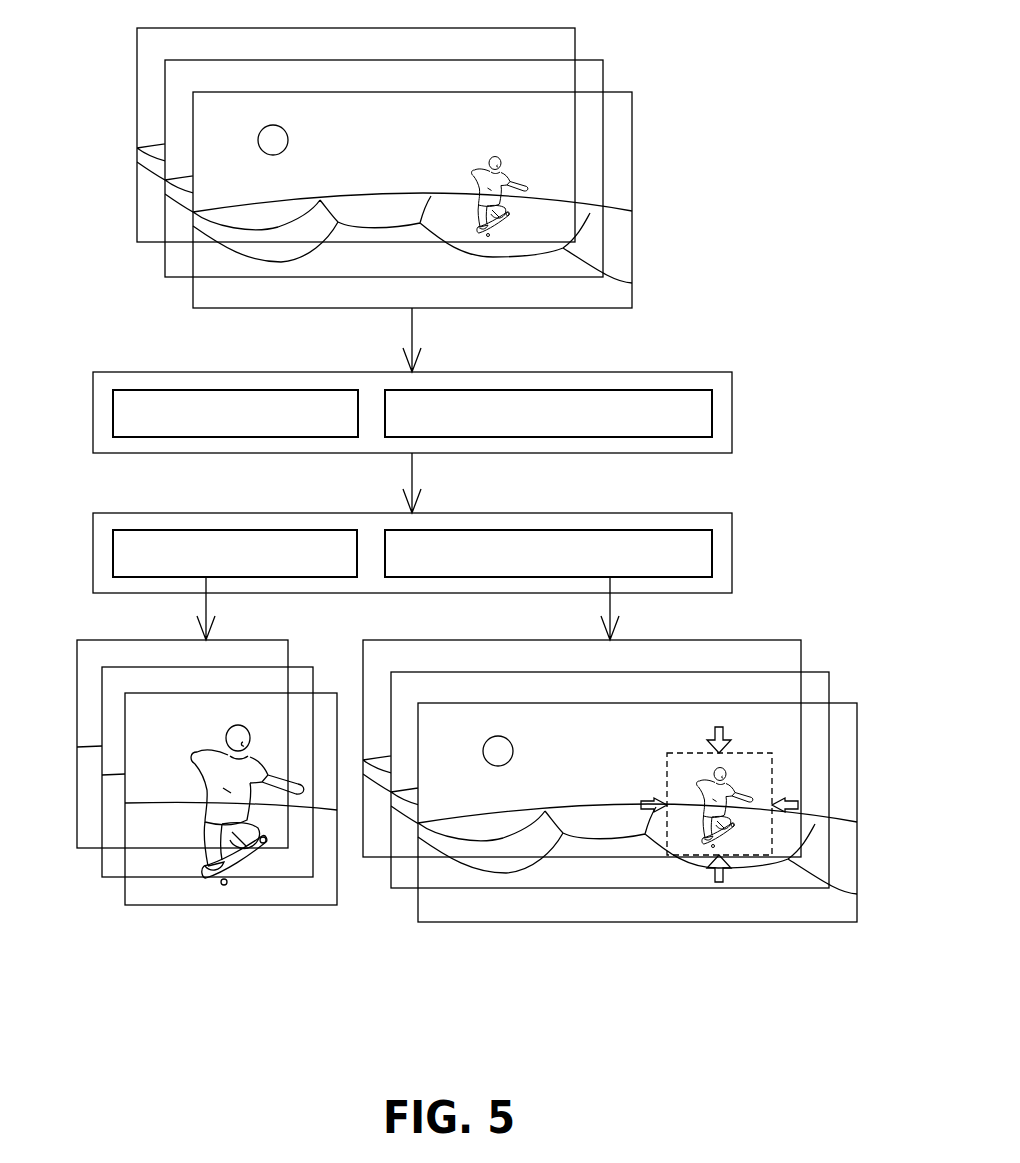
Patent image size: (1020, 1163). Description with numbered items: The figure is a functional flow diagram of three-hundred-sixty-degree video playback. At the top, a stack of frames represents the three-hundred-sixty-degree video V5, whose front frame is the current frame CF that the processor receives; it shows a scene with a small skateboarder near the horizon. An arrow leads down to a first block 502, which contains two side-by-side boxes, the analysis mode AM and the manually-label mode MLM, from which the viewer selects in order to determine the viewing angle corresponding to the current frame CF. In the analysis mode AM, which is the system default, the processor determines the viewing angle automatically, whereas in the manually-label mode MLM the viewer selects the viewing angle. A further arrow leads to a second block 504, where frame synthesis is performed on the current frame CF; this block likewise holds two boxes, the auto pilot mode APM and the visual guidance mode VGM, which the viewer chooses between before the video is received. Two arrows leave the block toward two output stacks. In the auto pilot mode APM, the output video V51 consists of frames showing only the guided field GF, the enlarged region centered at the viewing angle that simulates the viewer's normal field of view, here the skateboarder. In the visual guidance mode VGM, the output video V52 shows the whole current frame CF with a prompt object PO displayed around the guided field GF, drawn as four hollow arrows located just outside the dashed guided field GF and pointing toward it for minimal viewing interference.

The 360-degree video V5 is at (595, 25).
The current frame CF is at (632, 204).
The mode selection block 502 is at (461, 389).
The analysis mode AM is at (223, 390).
The manually-label mode MLM is at (507, 390).
The frame synthesize block 504 is at (461, 529).
The auto pilot mode APM is at (223, 530).
The visual guidance mode VGM is at (507, 530).
The output video of auto pilot mode V51 is at (123, 913).
The output video of visual guidance mode V52 is at (413, 926).
The guided field GF is at (228, 905).
The prompt object PO is at (726, 731).